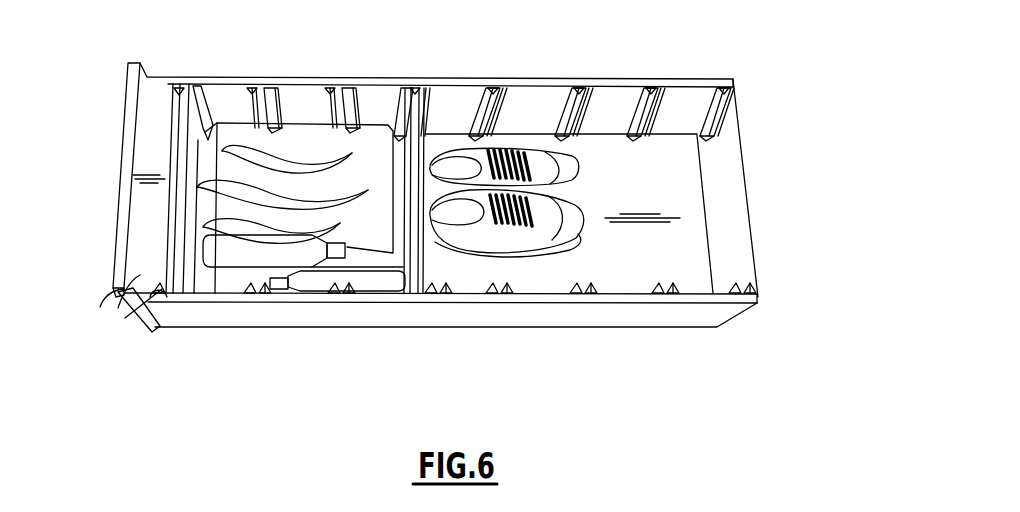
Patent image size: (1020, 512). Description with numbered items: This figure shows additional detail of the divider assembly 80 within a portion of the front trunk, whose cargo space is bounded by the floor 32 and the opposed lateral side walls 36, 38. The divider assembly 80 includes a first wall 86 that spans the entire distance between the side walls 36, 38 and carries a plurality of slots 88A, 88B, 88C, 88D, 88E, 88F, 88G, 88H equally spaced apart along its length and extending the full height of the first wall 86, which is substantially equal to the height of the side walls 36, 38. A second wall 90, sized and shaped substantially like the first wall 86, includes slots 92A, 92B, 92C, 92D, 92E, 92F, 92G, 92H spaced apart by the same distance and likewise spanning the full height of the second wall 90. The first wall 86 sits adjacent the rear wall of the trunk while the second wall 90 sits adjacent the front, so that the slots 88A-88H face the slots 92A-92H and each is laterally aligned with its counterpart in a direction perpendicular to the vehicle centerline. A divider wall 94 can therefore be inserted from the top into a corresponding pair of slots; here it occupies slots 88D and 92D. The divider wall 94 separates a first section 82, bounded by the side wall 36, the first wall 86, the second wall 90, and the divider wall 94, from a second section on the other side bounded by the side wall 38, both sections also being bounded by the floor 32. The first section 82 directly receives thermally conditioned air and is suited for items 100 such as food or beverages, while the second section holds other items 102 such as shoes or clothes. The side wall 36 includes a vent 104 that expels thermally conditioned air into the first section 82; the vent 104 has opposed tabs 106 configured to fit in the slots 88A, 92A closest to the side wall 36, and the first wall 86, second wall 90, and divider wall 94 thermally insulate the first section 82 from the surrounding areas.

The floor 32 is at (687, 267).
The side wall 36 is at (120, 258).
The side wall 38 is at (720, 167).
The divider assembly 80 is at (798, 205).
The first section 82 is at (215, 284).
The first wall 86 is at (522, 108).
The slot 88A is at (180, 70).
The slot 88B is at (263, 70).
The slot 88C is at (341, 70).
The slot 88D is at (418, 70).
The slot 88E is at (495, 70).
The slot 88F is at (581, 70).
The slot 88G is at (652, 70).
The slot 88H is at (725, 70).
The second wall 90 is at (570, 317).
The slot 92A is at (167, 307).
The slot 92B is at (258, 307).
The slot 92C is at (342, 307).
The slot 92D is at (423, 307).
The slot 92E is at (500, 307).
The slot 92F is at (583, 307).
The slot 92G is at (665, 307).
The slot 92H is at (742, 307).
The divider wall 94 is at (418, 180).
The items 100 is at (241, 288).
The items 102 is at (539, 274).
The vent 104 is at (118, 293).
The tabs 106 is at (187, 93).